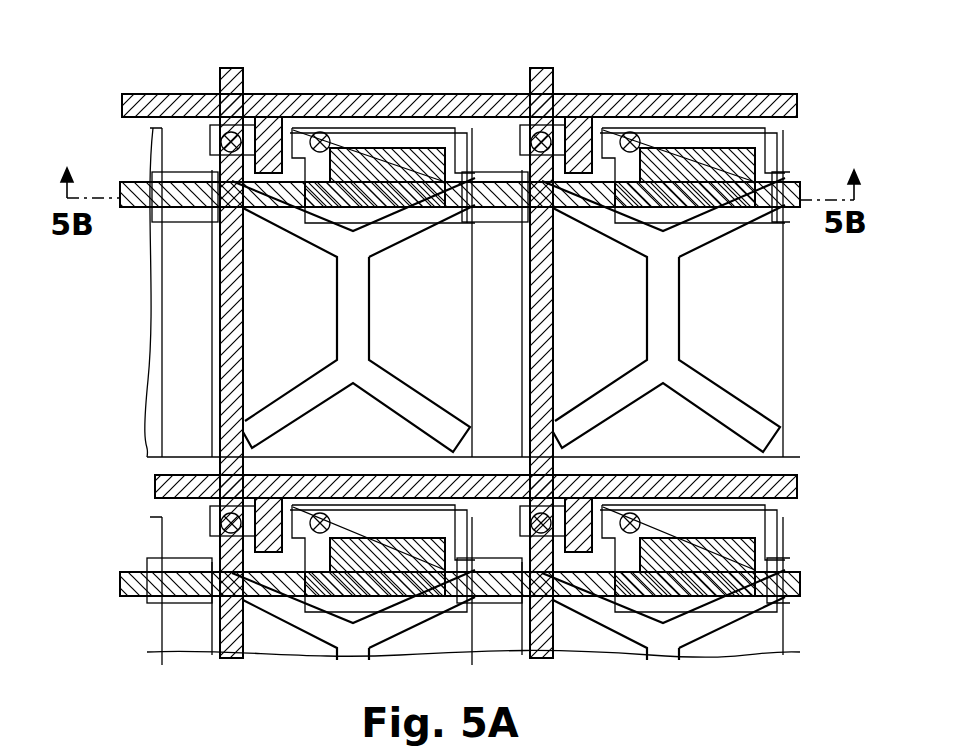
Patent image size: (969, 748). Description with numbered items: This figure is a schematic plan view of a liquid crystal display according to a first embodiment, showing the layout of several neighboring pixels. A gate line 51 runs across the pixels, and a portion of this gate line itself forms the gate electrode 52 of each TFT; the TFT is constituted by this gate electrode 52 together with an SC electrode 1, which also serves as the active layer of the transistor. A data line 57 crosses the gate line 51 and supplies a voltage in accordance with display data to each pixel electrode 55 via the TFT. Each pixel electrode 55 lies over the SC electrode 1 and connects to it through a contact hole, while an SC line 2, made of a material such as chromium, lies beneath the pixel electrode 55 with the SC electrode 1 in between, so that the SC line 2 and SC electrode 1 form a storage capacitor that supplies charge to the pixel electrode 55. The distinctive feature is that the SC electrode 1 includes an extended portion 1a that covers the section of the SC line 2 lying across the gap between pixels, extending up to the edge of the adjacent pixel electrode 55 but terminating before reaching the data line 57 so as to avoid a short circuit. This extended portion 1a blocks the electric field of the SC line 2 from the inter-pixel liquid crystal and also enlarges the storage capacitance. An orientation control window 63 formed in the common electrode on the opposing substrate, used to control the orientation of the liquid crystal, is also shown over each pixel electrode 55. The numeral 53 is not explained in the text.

The SC electrode 1 is at (357, 140).
The extended portion 1a is at (192, 172).
The SC line 2 is at (800, 195).
The gate line 51 is at (797, 106).
The gate electrode 52 is at (590, 120).
The semiconductor layer 53 is at (680, 140).
The pixel electrode 55 is at (463, 150).
The data line 57 is at (232, 68).
The orientation control window 63 is at (372, 325).
The thin film transistor TFT is at (272, 108).